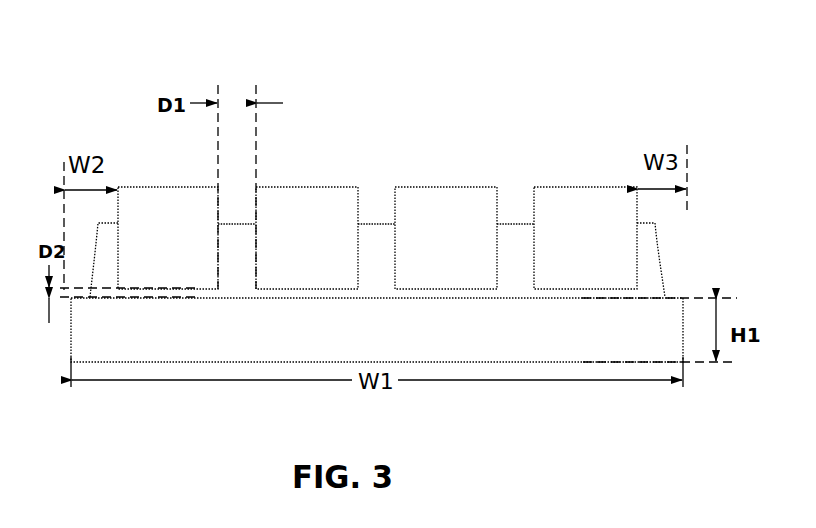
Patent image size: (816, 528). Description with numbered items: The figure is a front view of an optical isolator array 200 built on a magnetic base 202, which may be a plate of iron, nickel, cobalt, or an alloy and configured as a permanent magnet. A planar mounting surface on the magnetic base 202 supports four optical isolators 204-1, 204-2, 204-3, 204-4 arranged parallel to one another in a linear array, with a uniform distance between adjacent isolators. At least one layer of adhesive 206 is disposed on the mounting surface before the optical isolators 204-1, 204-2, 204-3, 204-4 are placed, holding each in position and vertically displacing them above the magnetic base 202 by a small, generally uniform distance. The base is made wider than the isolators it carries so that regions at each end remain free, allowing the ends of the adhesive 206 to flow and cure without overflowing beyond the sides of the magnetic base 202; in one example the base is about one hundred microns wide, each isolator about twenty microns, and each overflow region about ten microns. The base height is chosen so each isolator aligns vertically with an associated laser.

The optical isolator array 200 is at (95, 127).
The magnetic base 202 is at (383, 337).
The optical isolator 204-1 is at (135, 194).
The optical isolator 204-2 is at (287, 193).
The optical isolator 204-3 is at (431, 194).
The optical isolator 204-4 is at (567, 194).
The layer of adhesive 206 is at (645, 261).